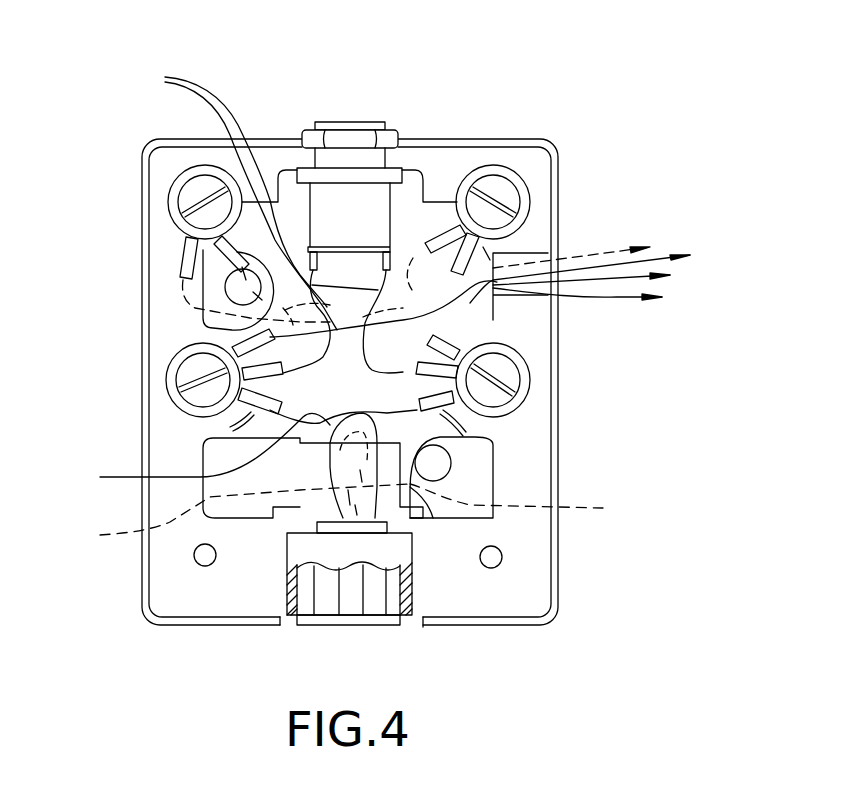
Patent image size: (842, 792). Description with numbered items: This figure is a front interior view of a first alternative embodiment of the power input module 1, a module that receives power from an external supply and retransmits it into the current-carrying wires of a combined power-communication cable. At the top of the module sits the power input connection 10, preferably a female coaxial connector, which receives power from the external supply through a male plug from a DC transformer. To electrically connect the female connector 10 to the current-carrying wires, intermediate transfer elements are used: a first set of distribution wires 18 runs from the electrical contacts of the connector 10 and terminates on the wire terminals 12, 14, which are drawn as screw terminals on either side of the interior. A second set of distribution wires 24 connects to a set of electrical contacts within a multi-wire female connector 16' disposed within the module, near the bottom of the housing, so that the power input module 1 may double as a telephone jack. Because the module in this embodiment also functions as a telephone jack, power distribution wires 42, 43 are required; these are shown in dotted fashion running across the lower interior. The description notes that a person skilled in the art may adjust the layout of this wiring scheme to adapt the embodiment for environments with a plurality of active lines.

The power input module 1 is at (560, 194).
The power input connection 10 is at (372, 120).
The wire terminal 12 is at (198, 372).
The wire terminal 14 is at (515, 380).
The multi-wire female connector 16' is at (401, 605).
The first set of distribution wires 18 is at (230, 195).
The second set of distribution wires 24 is at (193, 456).
The power distribution wire 42 is at (226, 520).
The power distribution wire 43 is at (532, 506).